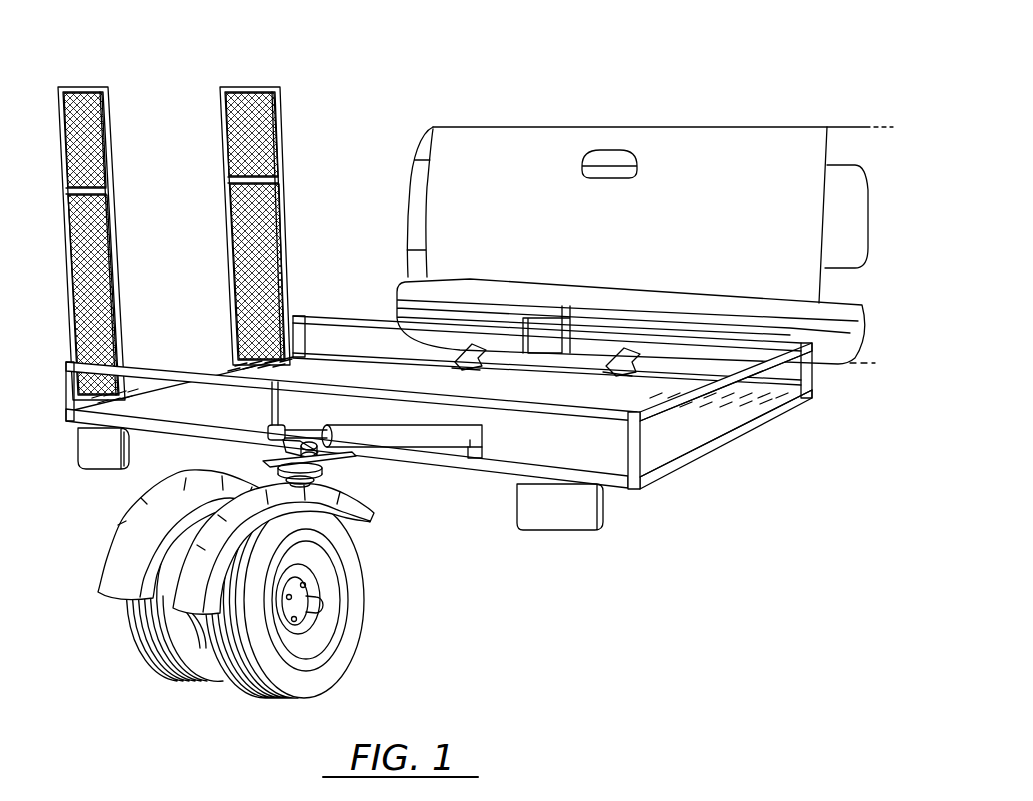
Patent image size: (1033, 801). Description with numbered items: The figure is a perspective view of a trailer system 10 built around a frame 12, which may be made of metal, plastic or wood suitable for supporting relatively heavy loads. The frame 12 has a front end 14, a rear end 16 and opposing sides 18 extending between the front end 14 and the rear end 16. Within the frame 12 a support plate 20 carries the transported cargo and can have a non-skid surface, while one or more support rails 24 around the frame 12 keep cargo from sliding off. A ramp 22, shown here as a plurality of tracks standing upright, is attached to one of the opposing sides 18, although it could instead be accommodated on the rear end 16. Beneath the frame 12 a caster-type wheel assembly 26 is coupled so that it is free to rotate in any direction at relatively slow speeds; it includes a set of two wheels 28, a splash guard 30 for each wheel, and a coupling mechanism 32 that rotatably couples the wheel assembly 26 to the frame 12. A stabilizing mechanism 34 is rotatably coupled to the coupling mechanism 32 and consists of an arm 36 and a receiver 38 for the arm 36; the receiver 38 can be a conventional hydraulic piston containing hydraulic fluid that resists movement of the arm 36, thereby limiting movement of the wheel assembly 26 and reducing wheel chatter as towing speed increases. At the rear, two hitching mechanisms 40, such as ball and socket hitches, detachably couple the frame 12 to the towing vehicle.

The trailer system 10 is at (456, 350).
The frame 12 is at (461, 390).
The front end 14 is at (343, 357).
The rear end 16 is at (510, 474).
The opposing sides 18 is at (220, 368).
The support plate 20 is at (724, 408).
The ramp 22 is at (90, 88).
The support rails 24 is at (616, 420).
The wheel assembly 26 is at (214, 584).
The wheels 28 is at (237, 584).
The splash guard 30 is at (118, 590).
The coupling mechanism 32 is at (353, 454).
The stabilizing mechanism 34 is at (412, 410).
The arm 36 is at (292, 425).
The receiver 38 is at (447, 433).
The hitching mechanism 40 is at (457, 350).